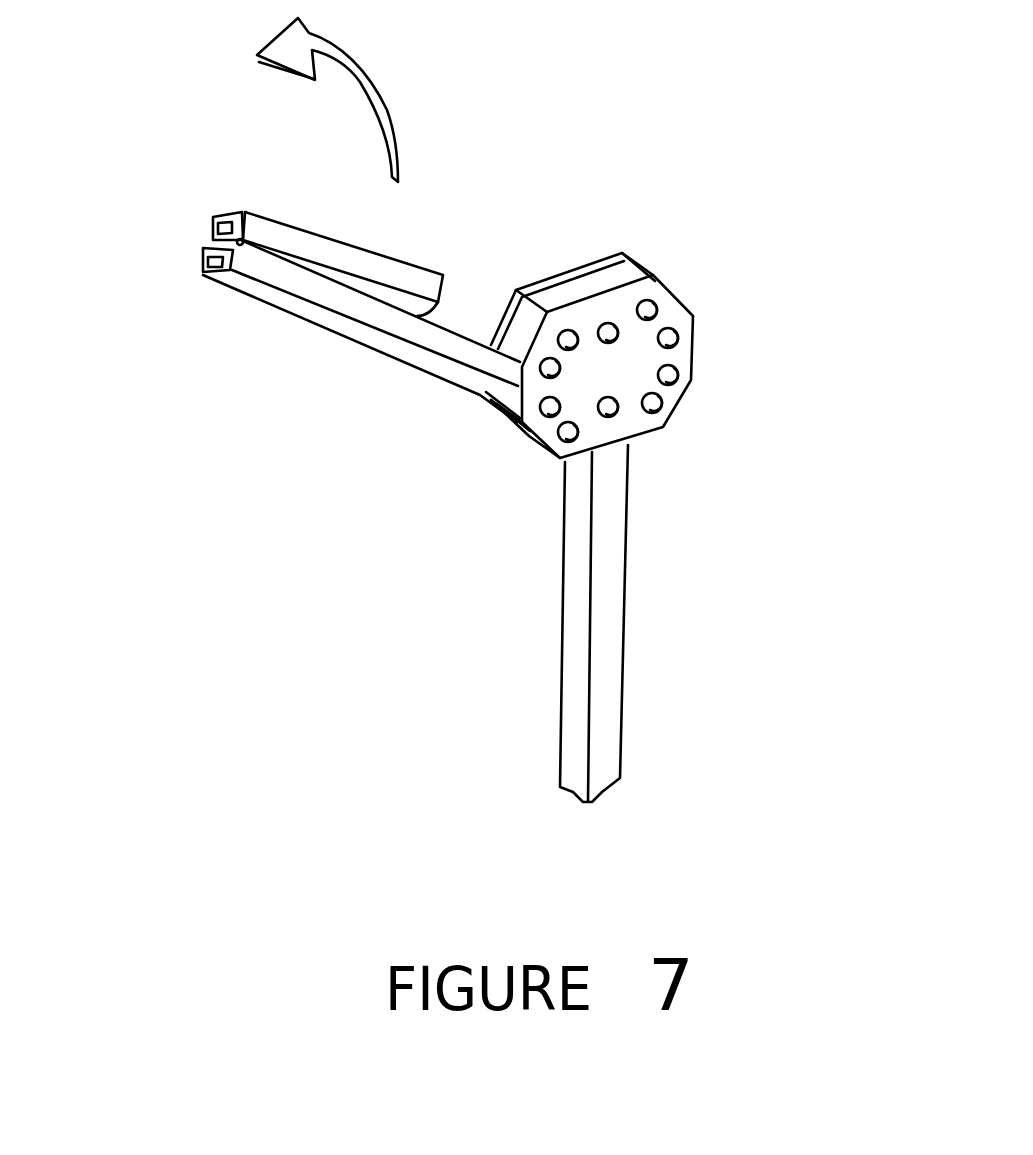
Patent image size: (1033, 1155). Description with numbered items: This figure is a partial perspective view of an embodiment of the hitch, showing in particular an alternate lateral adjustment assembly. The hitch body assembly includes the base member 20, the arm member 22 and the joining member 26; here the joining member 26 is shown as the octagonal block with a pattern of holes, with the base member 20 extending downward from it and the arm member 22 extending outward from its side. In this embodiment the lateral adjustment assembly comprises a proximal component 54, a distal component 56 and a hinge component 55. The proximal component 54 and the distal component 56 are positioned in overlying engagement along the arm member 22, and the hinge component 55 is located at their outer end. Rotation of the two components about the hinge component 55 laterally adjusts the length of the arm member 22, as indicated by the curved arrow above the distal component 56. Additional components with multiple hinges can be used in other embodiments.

The base member 20 is at (612, 613).
The arm member 22 is at (430, 375).
The joining member 26 is at (692, 348).
The proximal component 54 is at (370, 318).
The hinge component 55 is at (192, 245).
The distal component 56 is at (402, 258).